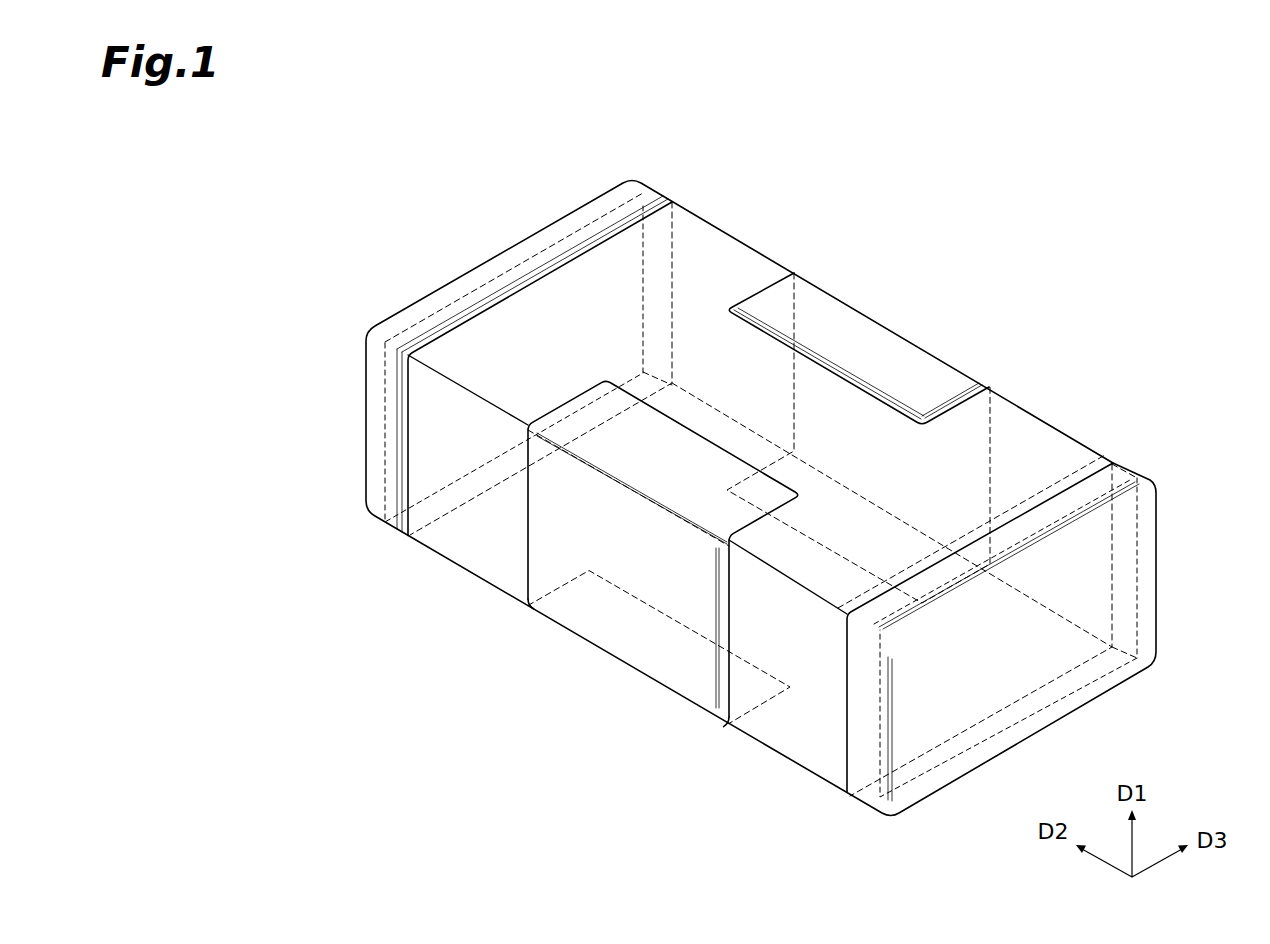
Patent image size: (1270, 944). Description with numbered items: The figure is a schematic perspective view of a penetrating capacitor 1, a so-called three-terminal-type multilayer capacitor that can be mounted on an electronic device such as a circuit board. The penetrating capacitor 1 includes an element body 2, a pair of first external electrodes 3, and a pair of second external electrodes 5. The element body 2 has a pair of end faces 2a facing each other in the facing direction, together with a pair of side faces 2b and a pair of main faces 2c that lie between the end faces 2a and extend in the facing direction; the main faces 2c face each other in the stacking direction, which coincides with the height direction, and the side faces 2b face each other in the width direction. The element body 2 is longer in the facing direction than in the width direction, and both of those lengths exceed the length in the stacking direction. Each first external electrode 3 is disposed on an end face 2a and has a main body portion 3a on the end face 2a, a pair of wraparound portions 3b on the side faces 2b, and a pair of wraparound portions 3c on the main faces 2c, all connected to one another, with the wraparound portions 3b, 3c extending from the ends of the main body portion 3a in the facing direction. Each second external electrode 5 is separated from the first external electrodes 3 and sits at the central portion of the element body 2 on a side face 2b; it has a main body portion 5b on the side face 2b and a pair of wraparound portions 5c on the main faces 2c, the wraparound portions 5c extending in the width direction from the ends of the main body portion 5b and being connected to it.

The penetrating capacitor 1 is at (1156, 288).
The element body 2 is at (1080, 441).
The end face 2a is at (530, 320).
The side face 2b is at (490, 528).
The main face 2c is at (722, 268).
The first external electrode 3 is at (583, 220).
The main body portion 3a is at (433, 407).
The wraparound portion 3b is at (378, 476).
The wraparound portion 3c is at (410, 322).
The second external electrode 5 is at (852, 327).
The main body portion 5b is at (965, 458).
The wraparound portion 5c is at (806, 312).